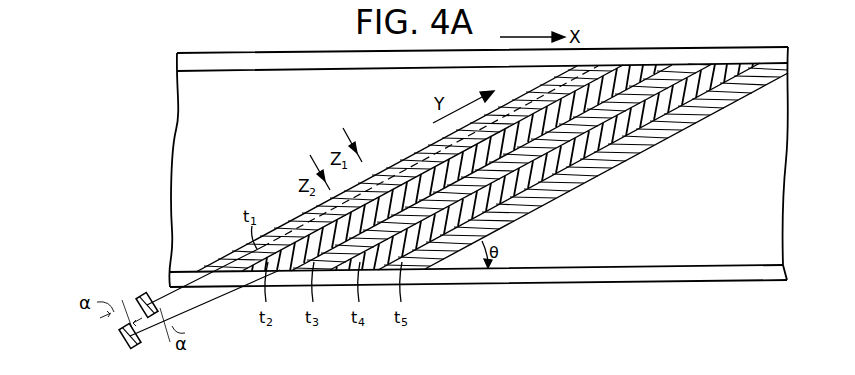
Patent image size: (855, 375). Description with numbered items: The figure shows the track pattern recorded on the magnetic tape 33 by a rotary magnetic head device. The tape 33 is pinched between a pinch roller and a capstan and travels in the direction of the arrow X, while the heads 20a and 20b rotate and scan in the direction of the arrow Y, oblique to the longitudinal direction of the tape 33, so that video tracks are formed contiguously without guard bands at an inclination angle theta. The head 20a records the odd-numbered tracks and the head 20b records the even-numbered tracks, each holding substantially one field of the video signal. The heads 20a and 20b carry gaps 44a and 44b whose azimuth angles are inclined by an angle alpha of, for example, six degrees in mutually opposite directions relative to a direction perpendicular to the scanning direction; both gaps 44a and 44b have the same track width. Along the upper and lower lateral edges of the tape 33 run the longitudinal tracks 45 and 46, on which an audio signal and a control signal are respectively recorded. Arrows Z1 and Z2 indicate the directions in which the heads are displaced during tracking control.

The tape 33 is at (180, 126).
The track 45 is at (712, 50).
The track 46 is at (592, 275).
The head 20a is at (128, 282).
The head 20b is at (119, 349).
The gap 44a is at (143, 266).
The gap 44b is at (136, 345).